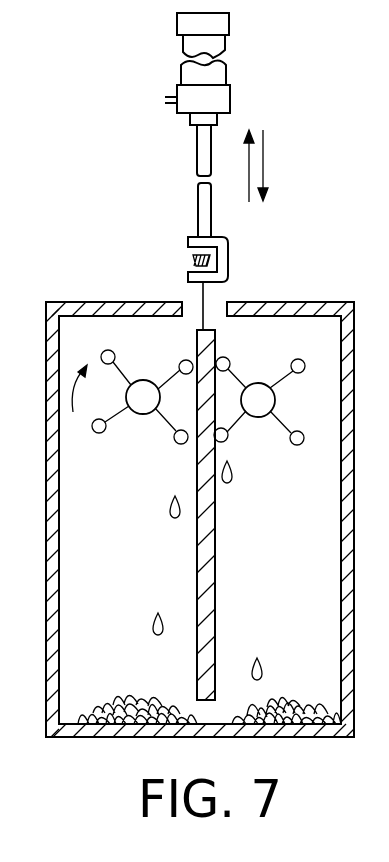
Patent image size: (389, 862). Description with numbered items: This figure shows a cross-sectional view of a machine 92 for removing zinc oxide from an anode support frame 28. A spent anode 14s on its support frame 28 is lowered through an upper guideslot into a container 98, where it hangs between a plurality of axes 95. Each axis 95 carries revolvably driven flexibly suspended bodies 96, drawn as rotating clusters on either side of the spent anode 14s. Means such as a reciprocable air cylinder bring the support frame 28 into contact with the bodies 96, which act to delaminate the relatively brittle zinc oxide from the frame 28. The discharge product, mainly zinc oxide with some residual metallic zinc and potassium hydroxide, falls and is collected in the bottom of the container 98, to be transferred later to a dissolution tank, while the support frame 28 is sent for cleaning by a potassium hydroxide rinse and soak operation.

The anode support frame 28 is at (203, 294).
The revolvably driven flexibly suspended bodies 96 is at (108, 350).
The axes 95 is at (136, 412).
The spent anode 14s is at (215, 628).
The machine 92 is at (185, 547).
The container 98 is at (354, 680).